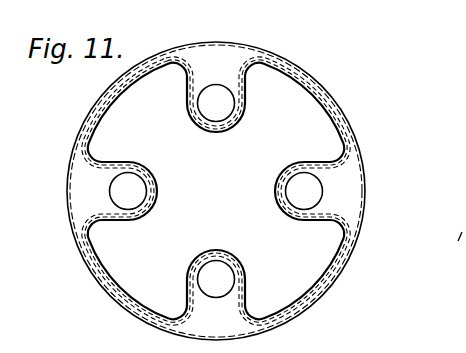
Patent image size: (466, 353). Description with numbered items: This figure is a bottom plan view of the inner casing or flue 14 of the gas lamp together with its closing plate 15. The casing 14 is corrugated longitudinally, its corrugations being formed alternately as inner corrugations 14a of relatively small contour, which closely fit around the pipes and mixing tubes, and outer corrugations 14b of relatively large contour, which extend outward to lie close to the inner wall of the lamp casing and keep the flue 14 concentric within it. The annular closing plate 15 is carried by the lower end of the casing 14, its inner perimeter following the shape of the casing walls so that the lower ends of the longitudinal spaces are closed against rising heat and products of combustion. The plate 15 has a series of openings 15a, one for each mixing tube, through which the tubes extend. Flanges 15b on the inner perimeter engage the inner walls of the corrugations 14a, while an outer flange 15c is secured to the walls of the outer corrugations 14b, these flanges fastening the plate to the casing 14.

The casing or flue 14 is at (223, 191).
The inner corrugations 14a is at (133, 160).
The outer corrugations 14b is at (118, 298).
The annular closing plate 15 is at (247, 57).
The openings 15a is at (228, 112).
The flanges 15b is at (196, 256).
The flange 15c is at (365, 183).